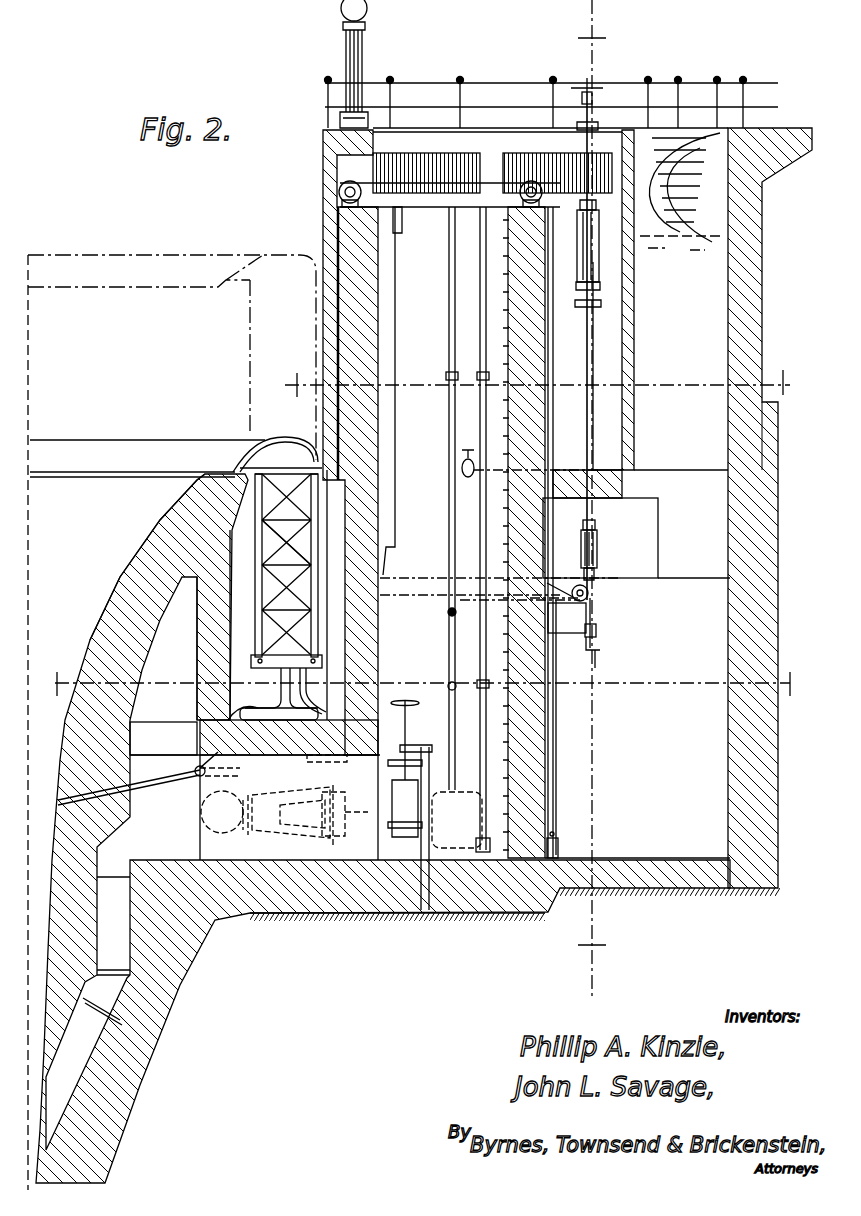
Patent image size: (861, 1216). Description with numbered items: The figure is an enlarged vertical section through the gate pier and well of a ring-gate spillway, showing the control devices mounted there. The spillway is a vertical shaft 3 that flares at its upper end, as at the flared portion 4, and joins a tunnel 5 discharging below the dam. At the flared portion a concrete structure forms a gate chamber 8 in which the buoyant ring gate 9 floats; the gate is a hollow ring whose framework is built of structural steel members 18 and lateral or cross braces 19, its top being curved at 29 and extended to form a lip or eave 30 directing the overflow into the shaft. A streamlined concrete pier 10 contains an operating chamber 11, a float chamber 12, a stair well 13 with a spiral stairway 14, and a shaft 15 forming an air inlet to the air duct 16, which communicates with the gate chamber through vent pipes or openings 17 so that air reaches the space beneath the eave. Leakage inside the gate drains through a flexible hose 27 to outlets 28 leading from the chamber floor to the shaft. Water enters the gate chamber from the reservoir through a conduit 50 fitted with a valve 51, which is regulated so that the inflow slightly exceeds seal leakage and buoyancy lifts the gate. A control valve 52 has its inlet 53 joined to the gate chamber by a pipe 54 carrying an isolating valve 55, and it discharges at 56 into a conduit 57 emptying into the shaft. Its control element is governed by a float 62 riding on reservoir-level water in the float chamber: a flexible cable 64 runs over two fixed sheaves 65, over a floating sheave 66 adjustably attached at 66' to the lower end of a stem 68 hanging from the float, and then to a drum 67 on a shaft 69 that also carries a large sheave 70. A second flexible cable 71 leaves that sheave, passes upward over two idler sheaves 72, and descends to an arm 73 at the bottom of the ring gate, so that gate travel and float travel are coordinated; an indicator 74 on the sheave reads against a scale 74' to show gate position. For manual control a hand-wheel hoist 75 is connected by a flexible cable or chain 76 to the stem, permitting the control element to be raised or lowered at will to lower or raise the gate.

The vertical shaft 3 is at (35, 1168).
The flared portion 4 is at (133, 590).
The tunnel 5 is at (592, 500).
The gate chamber 8 is at (238, 642).
The ring gate 9 is at (267, 608).
The concrete pier 10 is at (764, 312).
The operating chamber 11 is at (637, 810).
The float chamber 12 is at (610, 357).
The stair well 13 is at (681, 396).
The spiral stairway 14 is at (680, 254).
The shaft 15 is at (325, 234).
The air duct 16 is at (163, 739).
The vent pipes or openings 17 is at (185, 518).
The structural steel members 18 is at (300, 502).
The lateral or cross braces 19 is at (300, 548).
The flexible hose 27 is at (277, 694).
The outlets 28 is at (152, 778).
The curved top portion 29 is at (262, 445).
The lip or eave 30 is at (233, 470).
The conduit 50 is at (291, 806).
The valve 51 is at (246, 823).
The control valve 52 is at (425, 908).
The inlet 53 is at (457, 820).
The pipe 54 is at (345, 820).
The valve 55 is at (405, 778).
The discharge 56 is at (480, 858).
The conduit 57 is at (250, 915).
The float 62 is at (602, 272).
The flexible cable 64 is at (450, 650).
The fixed sheaves 65 is at (452, 614).
The floating sheave 66 is at (611, 555).
The adjustable connection 66' is at (613, 518).
The drum 67 is at (600, 630).
The stem 68 is at (588, 425).
The shaft 69 is at (596, 640).
The large sheave 70 is at (549, 618).
The flexible cable 71 is at (385, 565).
The idler sheaves 72 is at (340, 190).
The arm 73 is at (300, 757).
The indicator 74 is at (588, 836).
The scale 74' is at (588, 532).
The hand-wheel hoist 75 is at (596, 90).
The flexible cable or chain 76 is at (590, 172).